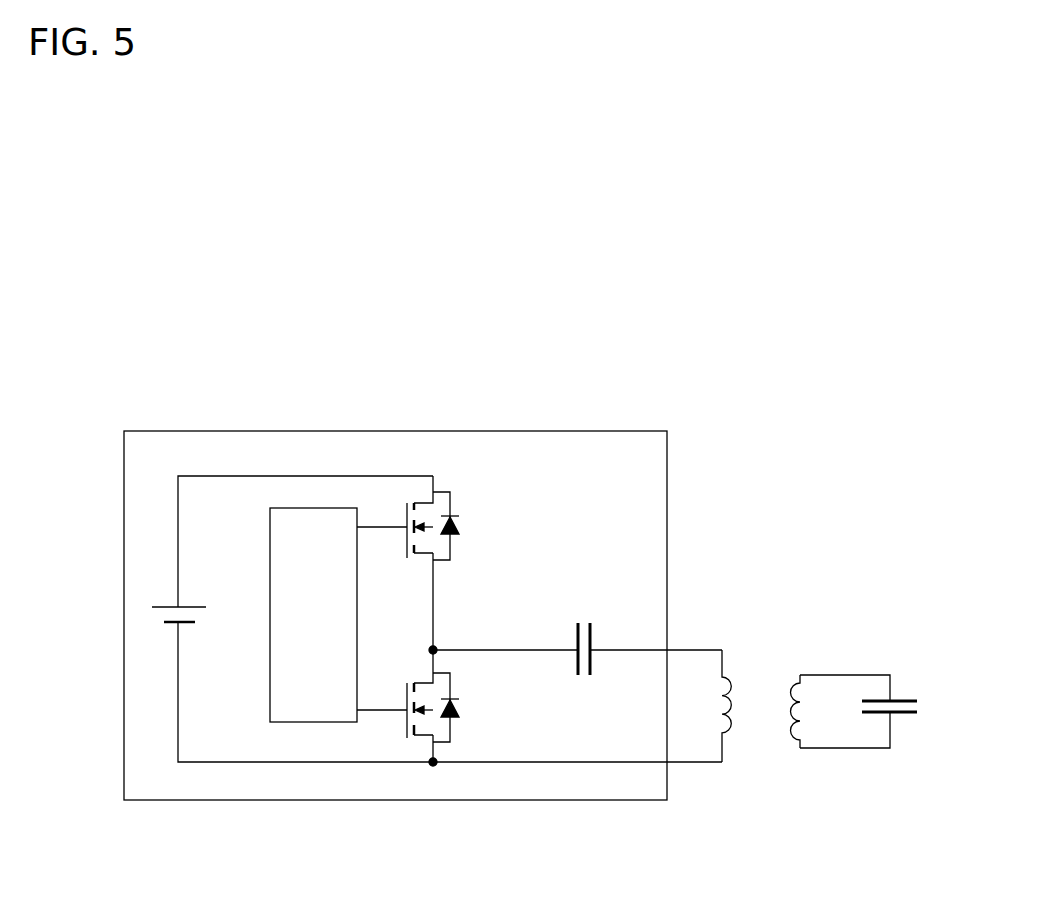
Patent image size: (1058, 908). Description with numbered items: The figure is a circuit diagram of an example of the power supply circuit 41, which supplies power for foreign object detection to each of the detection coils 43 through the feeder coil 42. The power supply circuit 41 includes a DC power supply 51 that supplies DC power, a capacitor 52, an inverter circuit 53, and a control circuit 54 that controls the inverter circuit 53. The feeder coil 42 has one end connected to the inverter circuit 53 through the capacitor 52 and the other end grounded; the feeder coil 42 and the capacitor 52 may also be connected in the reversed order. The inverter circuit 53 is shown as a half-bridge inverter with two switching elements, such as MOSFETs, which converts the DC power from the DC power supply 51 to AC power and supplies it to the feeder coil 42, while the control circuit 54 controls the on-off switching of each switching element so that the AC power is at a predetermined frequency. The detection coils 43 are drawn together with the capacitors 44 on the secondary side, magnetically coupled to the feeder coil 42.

The power supply circuit 41 is at (652, 818).
The feeder coil 42 is at (740, 722).
The detection coils 43 is at (778, 693).
The capacitors 44-1 to 44-n 44 is at (905, 718).
The DC power supply 51 is at (157, 613).
The capacitor 52 is at (582, 620).
The inverter circuit 53 is at (465, 808).
The control circuit 54 is at (314, 722).